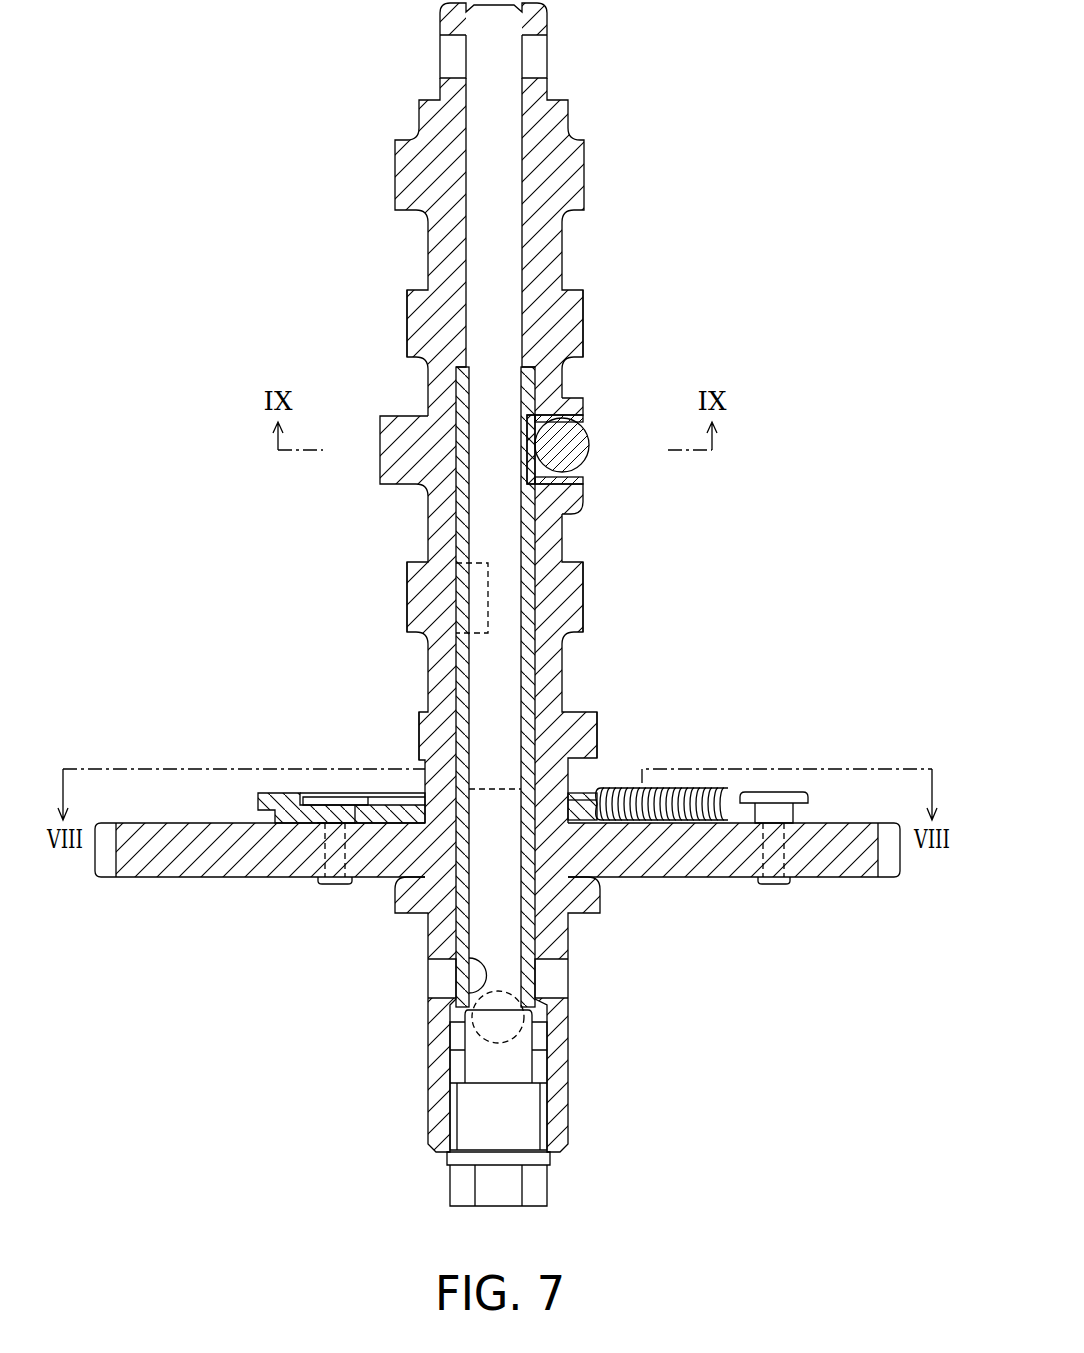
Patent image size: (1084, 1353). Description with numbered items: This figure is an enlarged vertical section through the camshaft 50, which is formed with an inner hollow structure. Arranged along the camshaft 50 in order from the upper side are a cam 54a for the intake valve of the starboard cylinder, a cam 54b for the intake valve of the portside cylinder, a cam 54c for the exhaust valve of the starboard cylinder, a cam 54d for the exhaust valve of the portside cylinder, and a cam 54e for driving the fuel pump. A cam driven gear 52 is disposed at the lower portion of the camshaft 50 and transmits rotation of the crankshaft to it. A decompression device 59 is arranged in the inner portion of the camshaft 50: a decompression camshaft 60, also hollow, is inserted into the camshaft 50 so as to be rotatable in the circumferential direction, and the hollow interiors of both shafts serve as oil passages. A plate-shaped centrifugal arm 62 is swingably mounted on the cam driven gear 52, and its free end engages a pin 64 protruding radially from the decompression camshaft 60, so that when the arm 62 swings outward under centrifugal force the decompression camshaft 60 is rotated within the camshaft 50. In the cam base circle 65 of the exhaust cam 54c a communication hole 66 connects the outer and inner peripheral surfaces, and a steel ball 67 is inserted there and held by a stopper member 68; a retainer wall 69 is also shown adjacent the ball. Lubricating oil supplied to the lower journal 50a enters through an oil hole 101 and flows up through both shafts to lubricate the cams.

The camshaft 50 is at (474, 604).
The lower journal 50a is at (440, 1052).
The cam driven gear 52 is at (228, 855).
The cam for the intake valve of the starboard side cylinder 54a is at (405, 174).
The cam for the intake valve of the portside side cylinder 54b is at (415, 327).
The cam for the exhaust valve of the starboard side cylinder 54c is at (380, 474).
The cam for the exhaust valve of the portside side cylinder 54d is at (415, 602).
The cam for driving a fuel pump 54e is at (427, 740).
The decompression device 59 is at (698, 746).
The decompression camshaft 60 is at (528, 675).
The centrifugal arm 62 is at (297, 800).
The pin 64 is at (583, 792).
The cam base circle 65 is at (585, 407).
The communication hole 66 is at (545, 478).
The steel ball 67 is at (579, 458).
The stopper member 68 is at (560, 412).
The retainer wall 69 is at (530, 422).
The oil hole 101 is at (438, 981).